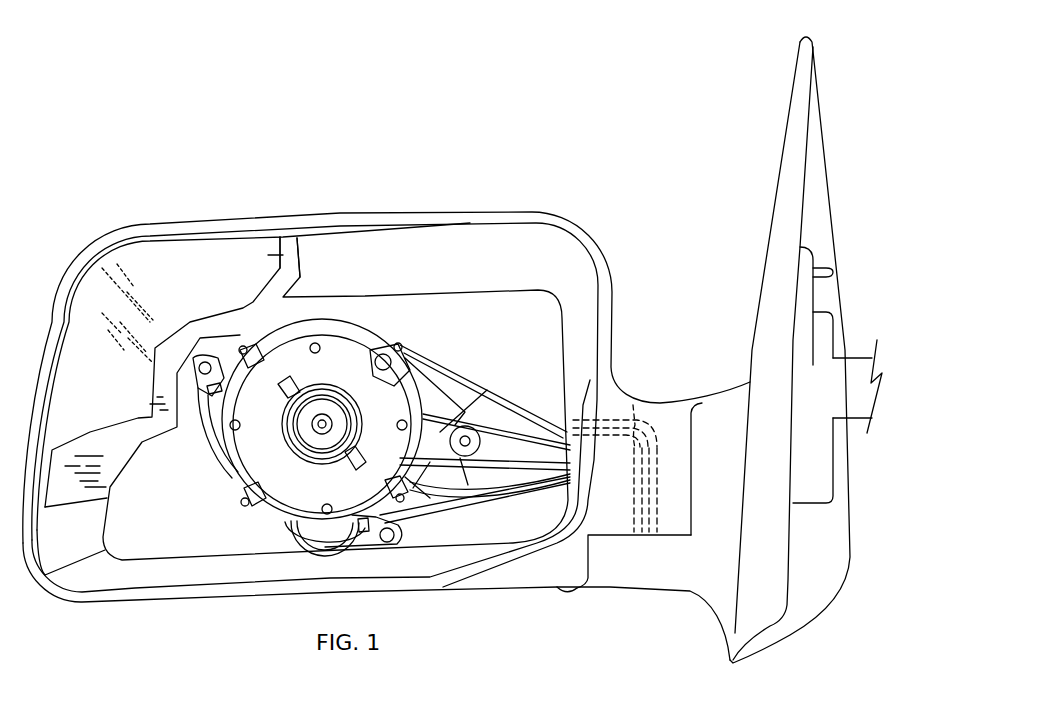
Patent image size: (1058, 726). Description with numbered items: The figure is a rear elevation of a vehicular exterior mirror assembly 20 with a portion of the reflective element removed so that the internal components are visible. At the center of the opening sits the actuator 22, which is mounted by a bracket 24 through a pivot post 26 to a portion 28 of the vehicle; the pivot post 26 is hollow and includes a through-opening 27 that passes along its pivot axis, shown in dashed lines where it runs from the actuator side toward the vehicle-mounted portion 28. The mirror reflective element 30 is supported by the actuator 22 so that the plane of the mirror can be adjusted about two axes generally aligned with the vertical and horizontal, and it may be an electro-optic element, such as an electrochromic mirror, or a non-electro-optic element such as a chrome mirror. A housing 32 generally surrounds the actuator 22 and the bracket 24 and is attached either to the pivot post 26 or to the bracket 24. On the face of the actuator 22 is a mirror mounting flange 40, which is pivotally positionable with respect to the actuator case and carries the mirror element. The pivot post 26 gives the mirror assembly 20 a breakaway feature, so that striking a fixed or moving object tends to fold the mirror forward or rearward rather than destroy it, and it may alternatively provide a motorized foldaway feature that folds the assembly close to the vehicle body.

The vehicular exterior mirror assembly 20 is at (262, 190).
The actuator 22 is at (455, 350).
The bracket 24 is at (477, 397).
The pivot post 26 is at (633, 530).
The through-opening 27 is at (633, 405).
The portion of a vehicle 28 is at (782, 138).
The mirror reflective element 30 is at (302, 257).
The housing 32 is at (470, 205).
The mirror mounting flange 40 is at (350, 326).